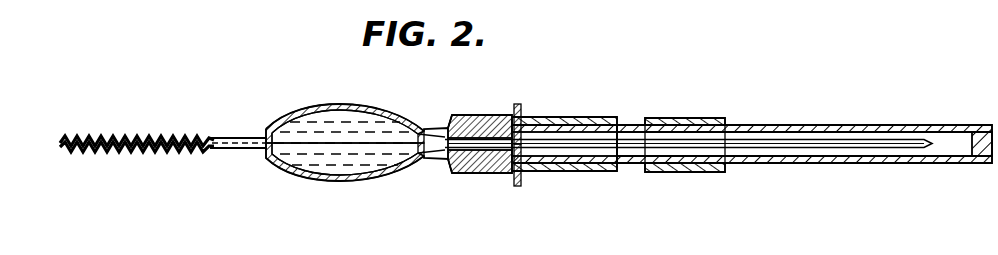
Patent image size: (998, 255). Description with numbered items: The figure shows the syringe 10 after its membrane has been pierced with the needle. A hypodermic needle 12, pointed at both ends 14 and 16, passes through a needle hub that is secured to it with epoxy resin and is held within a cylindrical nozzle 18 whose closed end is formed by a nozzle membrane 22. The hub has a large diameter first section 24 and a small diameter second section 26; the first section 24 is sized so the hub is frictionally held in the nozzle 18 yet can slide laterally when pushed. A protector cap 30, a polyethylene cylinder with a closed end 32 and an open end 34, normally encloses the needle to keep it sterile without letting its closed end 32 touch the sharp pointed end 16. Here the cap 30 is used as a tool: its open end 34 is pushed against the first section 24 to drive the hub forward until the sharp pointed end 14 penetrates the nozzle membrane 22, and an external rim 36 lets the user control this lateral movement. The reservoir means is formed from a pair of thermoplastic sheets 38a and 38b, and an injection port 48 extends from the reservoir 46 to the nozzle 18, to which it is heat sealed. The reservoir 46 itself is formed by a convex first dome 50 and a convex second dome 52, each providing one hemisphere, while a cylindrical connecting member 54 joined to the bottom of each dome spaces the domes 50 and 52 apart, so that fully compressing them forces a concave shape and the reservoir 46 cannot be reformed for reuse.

The syringe 10 is at (529, 126).
The hypodermic needle 12 is at (804, 124).
The sharp pointed end 14 is at (432, 130).
The sharp pointed end 16 is at (691, 168).
The nozzle 18 is at (564, 165).
The nozzle membrane 22 is at (480, 123).
The first section 24 is at (516, 101).
The second section 26 is at (564, 122).
The protector cap 30 is at (794, 185).
The closed end 32 is at (985, 167).
The open end 34 is at (495, 179).
The external rim 36 is at (688, 122).
The sheet 38a is at (137, 119).
The sheet 38b is at (137, 170).
The reservoir 46 is at (346, 116).
The injection port 48 is at (427, 168).
The first dome 50 is at (345, 103).
The second dome 52 is at (340, 167).
The connecting member 54 is at (238, 121).